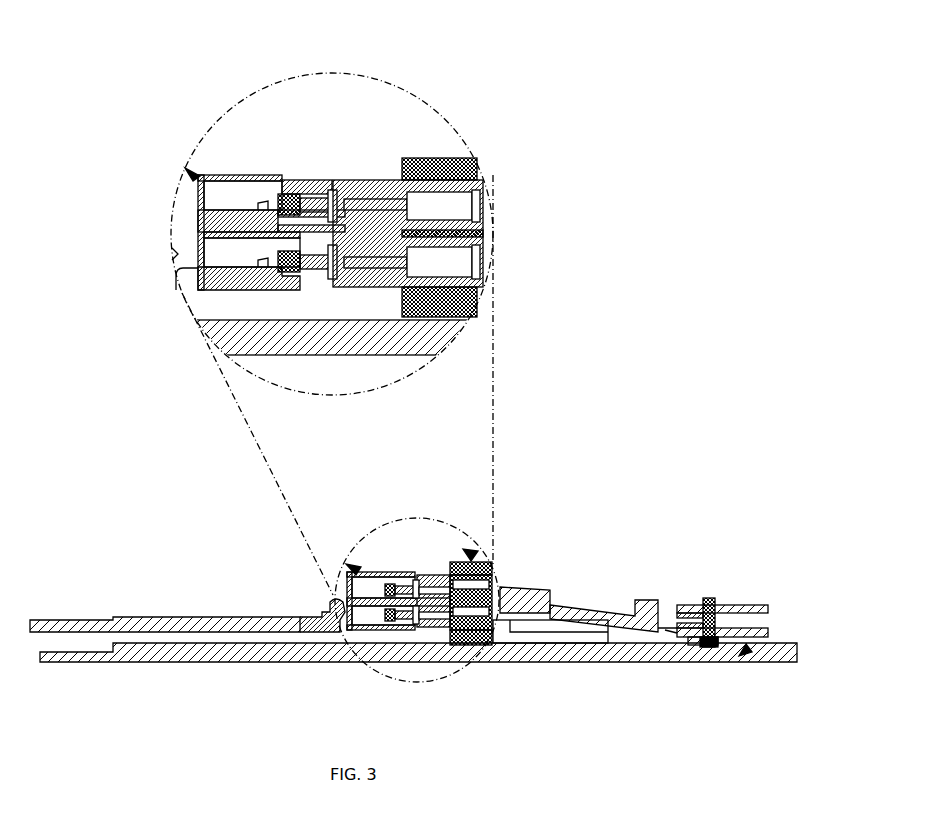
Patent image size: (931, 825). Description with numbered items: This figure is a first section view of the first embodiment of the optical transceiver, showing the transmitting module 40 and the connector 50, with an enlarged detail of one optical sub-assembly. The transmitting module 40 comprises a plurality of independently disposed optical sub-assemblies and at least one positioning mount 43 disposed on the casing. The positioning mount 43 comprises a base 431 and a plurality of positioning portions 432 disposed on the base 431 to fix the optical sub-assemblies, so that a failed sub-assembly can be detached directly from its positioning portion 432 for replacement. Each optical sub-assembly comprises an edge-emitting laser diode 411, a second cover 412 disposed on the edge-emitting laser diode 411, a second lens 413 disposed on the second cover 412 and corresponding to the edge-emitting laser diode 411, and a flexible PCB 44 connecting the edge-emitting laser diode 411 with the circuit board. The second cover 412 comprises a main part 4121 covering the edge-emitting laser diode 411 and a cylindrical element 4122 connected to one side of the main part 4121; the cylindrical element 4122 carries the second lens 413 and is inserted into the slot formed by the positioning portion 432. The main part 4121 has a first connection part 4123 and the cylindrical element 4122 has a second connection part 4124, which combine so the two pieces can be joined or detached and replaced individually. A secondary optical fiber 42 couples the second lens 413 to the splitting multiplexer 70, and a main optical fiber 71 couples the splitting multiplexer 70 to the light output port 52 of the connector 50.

The transmitting module 40 is at (350, 568).
The secondary optical fiber 42 is at (497, 588).
The positioning mount 43 is at (471, 552).
The base 431 is at (494, 562).
The positioning portion 432 is at (496, 646).
The flexible PCB 44 is at (330, 626).
The connector 50 is at (747, 652).
The light output port 52 is at (746, 605).
The splitting multiplexer 70 is at (589, 606).
The main optical fiber 71 is at (703, 615).
The edge-emitting laser diode 411 is at (264, 204).
The second cover 412 is at (190, 176).
The main part 4121 is at (197, 192).
The cylindrical element 4122 is at (407, 263).
The first connection part 4123 is at (320, 180).
The second connection part 4124 is at (477, 163).
The second lens 413 is at (287, 204).